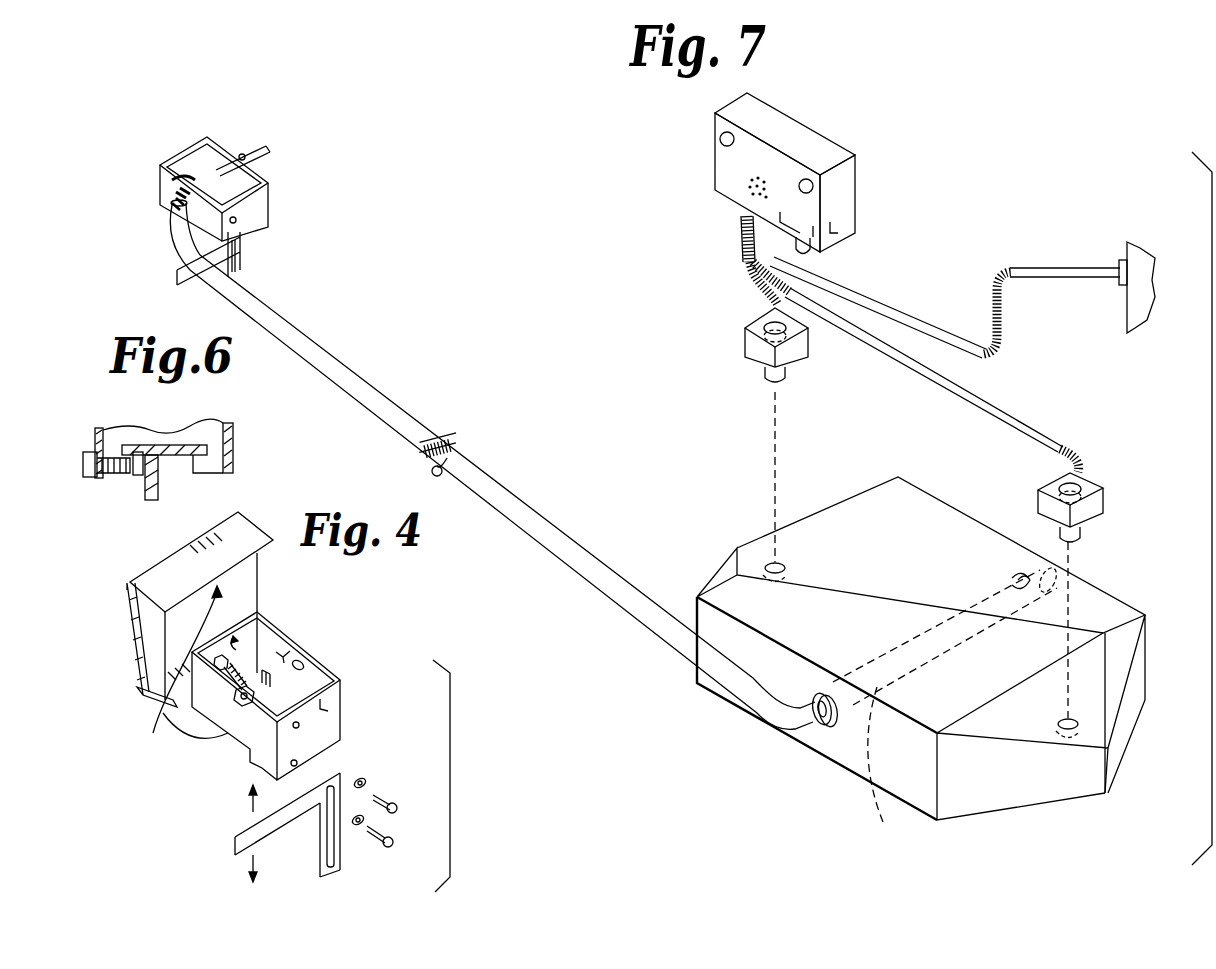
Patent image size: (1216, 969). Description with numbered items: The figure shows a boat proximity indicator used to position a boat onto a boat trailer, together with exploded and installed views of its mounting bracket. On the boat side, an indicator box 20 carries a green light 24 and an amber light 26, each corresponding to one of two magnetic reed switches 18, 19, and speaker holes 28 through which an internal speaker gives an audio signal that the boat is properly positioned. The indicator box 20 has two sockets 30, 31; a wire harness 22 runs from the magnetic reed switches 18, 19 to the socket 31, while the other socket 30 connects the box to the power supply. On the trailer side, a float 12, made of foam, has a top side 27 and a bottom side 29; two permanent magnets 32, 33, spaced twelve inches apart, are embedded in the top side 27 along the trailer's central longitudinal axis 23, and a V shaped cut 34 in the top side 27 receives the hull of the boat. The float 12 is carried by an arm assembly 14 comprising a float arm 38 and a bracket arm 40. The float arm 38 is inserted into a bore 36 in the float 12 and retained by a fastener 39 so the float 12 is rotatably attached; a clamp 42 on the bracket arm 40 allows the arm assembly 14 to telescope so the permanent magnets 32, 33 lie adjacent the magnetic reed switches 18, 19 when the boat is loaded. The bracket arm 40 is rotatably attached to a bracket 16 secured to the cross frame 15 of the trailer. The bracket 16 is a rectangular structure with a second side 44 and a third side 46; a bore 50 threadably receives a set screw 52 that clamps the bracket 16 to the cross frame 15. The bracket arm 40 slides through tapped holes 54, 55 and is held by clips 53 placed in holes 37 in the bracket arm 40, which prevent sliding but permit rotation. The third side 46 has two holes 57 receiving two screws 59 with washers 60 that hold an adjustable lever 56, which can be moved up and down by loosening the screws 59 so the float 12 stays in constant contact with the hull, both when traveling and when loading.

In FIG. 7, the float 12 is at (1024, 845).
In FIG. 7, the arm assembly 14 is at (480, 447).
In FIG. 6, the cross frame 15 is at (162, 460).
In FIG. 4, the cross frame 15 is at (133, 582).
In FIG. 6, the bracket 16 is at (117, 446).
In FIG. 4, the bracket 16 is at (340, 678).
In FIG. 7, the magnetic reed switch 18 is at (746, 352).
In FIG. 7, the magnetic reed switch 19 is at (1100, 485).
In FIG. 7, the indicator box 20 is at (780, 122).
In FIG. 7, the wire harness 22 is at (998, 403).
In FIG. 7, the central longitudinal axis 23 is at (880, 303).
In FIG. 7, the green light 24 is at (726, 140).
In FIG. 7, the amber light 26 is at (813, 188).
In FIG. 7, the top side 27 is at (1080, 584).
In FIG. 7, the speaker holes 28 is at (752, 190).
In FIG. 7, the bottom side 29 is at (1167, 690).
In FIG. 7, the socket 30 is at (812, 256).
In FIG. 7, the socket 31 is at (741, 218).
In FIG. 7, the permanent magnet 32 is at (768, 566).
In FIG. 7, the permanent magnet 33 is at (1108, 750).
In FIG. 7, the V shaped cut 34 is at (1082, 726).
In FIG. 7, the bore 36 is at (883, 798).
In FIG. 7, the holes 37 is at (170, 205).
In FIG. 7, the float arm 38 is at (533, 518).
In FIG. 7, the fastener 39 is at (826, 722).
In FIG. 7, the bracket arm 40 is at (393, 410).
In FIG. 7, the clamp 42 is at (450, 448).
In FIG. 4, the clamp 42 is at (250, 645).
In FIG. 4, the second side 44 is at (284, 655).
In FIG. 4, the third side 46 is at (340, 702).
In FIG. 4, the bore 50 is at (235, 692).
In FIG. 6, the set screw 52 is at (115, 478).
In FIG. 4, the set screw 52 is at (218, 668).
In FIG. 7, the clip 53 is at (175, 197).
In FIG. 7, the hole 54 is at (255, 172).
In FIG. 4, the hole 54 is at (302, 664).
In FIG. 7, the hole 55 is at (170, 178).
In FIG. 7, the adjustable lever 56 is at (208, 258).
In FIG. 4, the adjustable lever 56 is at (340, 845).
In FIG. 4, the holes 57 is at (297, 763).
In FIG. 4, the screws 59 is at (380, 797).
In FIG. 4, the washers 60 is at (362, 782).